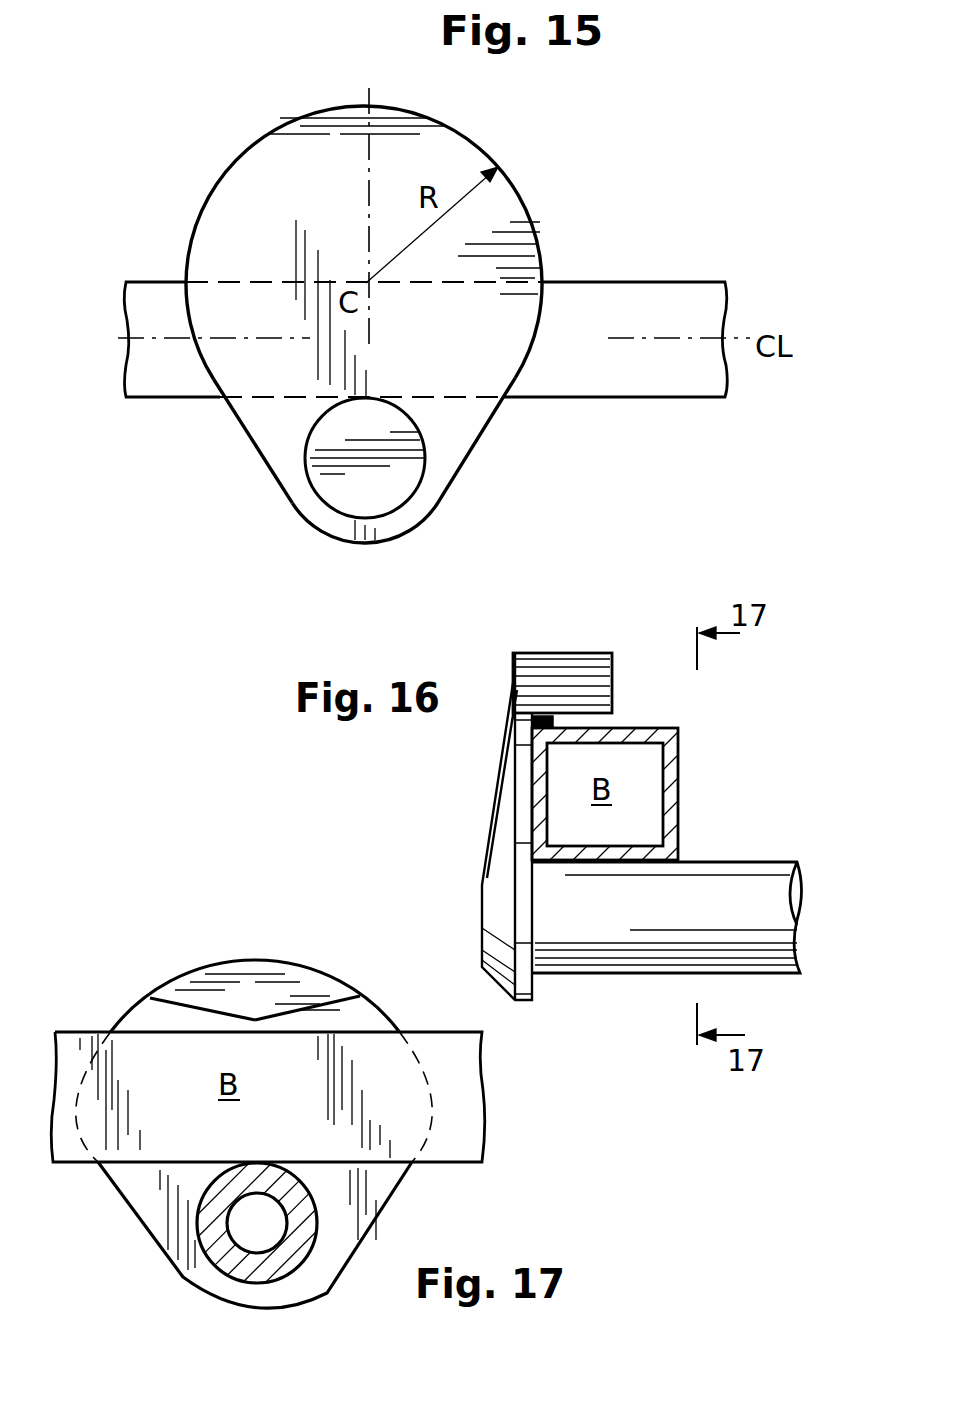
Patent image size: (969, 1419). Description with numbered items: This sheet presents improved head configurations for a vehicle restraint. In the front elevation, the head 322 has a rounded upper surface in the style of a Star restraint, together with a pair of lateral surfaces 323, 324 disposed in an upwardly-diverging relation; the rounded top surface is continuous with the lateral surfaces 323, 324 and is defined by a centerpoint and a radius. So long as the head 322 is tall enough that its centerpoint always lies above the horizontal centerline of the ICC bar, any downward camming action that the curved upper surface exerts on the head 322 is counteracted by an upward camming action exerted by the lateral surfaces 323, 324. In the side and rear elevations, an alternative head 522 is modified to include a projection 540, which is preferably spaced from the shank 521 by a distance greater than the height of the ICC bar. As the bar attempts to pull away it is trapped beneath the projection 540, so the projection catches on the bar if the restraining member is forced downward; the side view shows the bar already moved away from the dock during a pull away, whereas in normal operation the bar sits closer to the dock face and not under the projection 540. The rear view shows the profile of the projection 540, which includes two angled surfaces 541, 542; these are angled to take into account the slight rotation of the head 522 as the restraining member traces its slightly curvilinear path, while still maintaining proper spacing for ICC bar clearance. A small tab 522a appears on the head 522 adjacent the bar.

In FIG. 15, the head 322 is at (496, 226).
In FIG. 15, the lateral surface 323 is at (468, 462).
In FIG. 15, the lateral surface 324 is at (258, 457).
In FIG. 16, the shank 521 is at (623, 927).
In FIG. 16, the head 522 is at (495, 902).
In FIG. 17, the head 522 is at (148, 1200).
In FIG. 16, the retaining tab 522a is at (548, 720).
In FIG. 16, the projection 540 is at (590, 685).
In FIG. 17, the projection 540 is at (240, 990).
In FIG. 17, the angled surface 541 is at (130, 1012).
In FIG. 17, the angled surface 542 is at (337, 1008).